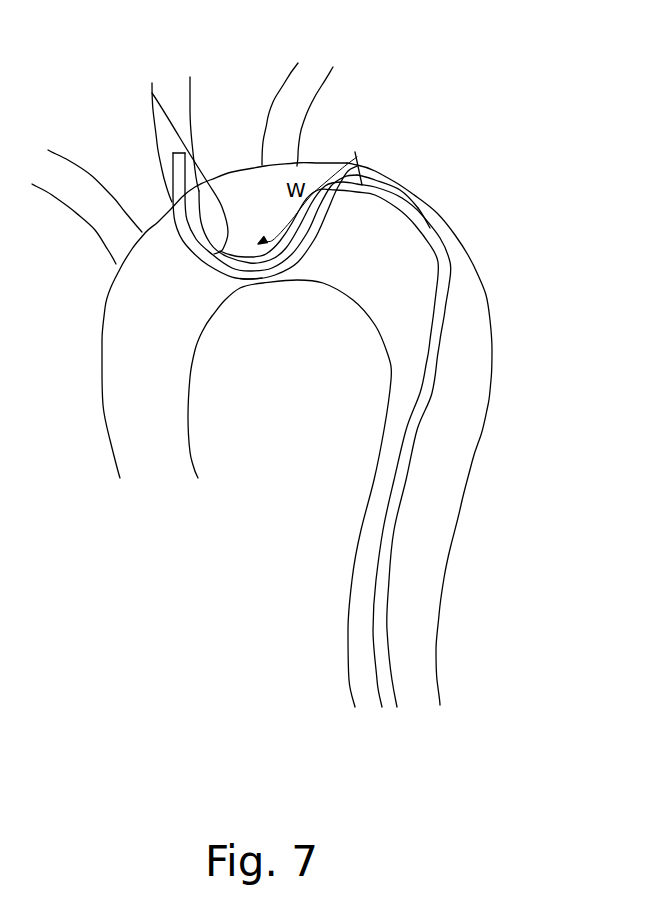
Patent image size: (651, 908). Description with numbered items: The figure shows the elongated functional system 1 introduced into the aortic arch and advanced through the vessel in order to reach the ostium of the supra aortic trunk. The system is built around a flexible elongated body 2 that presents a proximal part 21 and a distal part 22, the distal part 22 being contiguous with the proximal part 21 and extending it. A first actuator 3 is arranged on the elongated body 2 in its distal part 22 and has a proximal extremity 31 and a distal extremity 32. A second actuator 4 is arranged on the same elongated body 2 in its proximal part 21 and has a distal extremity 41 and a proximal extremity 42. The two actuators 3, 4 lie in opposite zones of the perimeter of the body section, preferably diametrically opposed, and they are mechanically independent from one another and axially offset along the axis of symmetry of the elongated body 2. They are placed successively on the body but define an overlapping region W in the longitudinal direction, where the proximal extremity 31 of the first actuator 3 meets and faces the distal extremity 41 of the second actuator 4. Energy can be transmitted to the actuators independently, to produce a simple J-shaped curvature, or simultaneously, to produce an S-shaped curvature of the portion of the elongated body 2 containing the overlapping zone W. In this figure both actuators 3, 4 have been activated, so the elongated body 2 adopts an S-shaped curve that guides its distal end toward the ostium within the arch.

The elongated functional system 1 is at (466, 313).
The elongated body 2 is at (309, 385).
The proximal part 21 is at (443, 638).
The distal part 22 is at (160, 233).
The first actuator 3 is at (301, 147).
The proximal extremity 31 is at (352, 167).
The distal extremity 32 is at (151, 88).
The second actuator 4 is at (321, 298).
The distal extremity 41 is at (427, 250).
The proximal extremity 42 is at (262, 288).